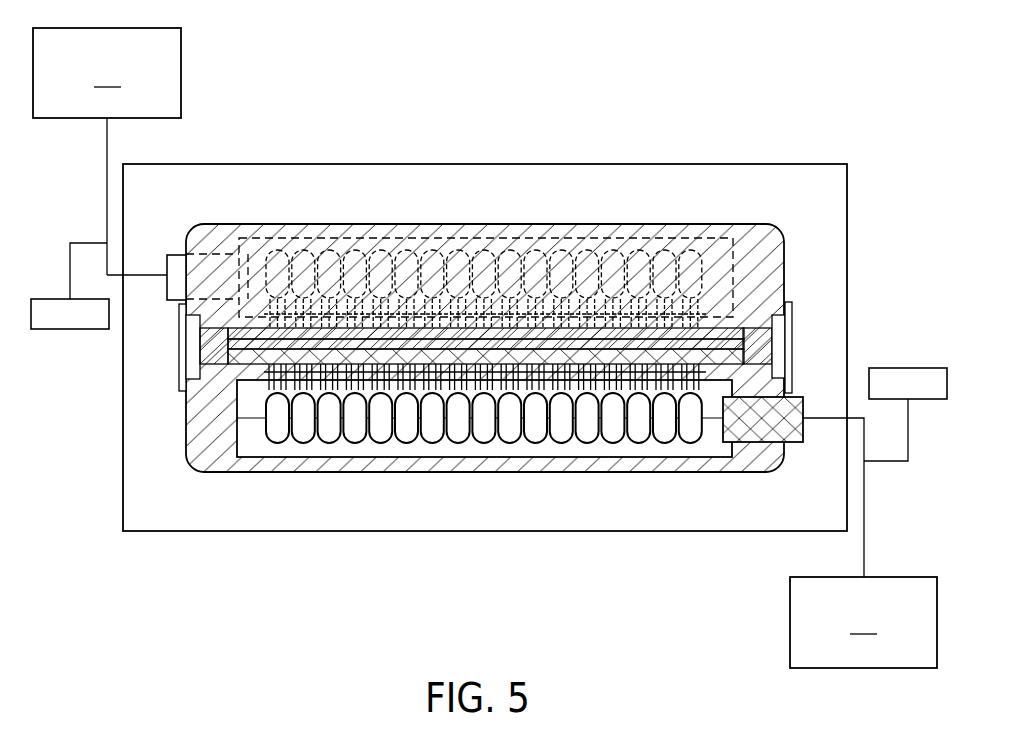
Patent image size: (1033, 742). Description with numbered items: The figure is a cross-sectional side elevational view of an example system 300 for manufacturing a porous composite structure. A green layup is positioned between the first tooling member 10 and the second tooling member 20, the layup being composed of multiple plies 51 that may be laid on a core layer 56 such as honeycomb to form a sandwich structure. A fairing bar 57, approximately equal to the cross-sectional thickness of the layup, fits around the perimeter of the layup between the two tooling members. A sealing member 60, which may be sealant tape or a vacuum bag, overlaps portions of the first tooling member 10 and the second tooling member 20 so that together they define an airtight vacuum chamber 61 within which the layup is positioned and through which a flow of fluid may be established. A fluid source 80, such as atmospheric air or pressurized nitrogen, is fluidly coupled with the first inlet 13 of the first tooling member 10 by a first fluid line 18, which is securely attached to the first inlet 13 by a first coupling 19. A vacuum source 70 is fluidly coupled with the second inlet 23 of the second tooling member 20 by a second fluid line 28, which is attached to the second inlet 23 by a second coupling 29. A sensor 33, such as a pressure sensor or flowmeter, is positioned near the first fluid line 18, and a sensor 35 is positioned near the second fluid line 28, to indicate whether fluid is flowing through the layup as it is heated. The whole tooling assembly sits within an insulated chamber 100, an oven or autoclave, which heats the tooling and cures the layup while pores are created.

The system 300 is at (757, 100).
The insulated chamber 100 is at (577, 183).
The first tooling member 10 is at (771, 263).
The second tooling member 20 is at (223, 463).
The first inlet 13 is at (213, 241).
The first coupling 19 is at (173, 251).
The first fluid line 18 is at (107, 184).
The sensor 33 is at (70, 331).
The sensor 35 is at (905, 367).
The second fluid line 28 is at (864, 518).
The fluid source 80 is at (107, 73).
The vacuum source 70 is at (863, 622).
The fairing bar 57 is at (213, 340).
The sealing member 60 is at (182, 378).
The plies 51 is at (733, 330).
The core layer 56 is at (732, 358).
The vacuum chamber 61 is at (576, 452).
The second coupling 29 is at (792, 437).
The second inlet 23 is at (751, 443).